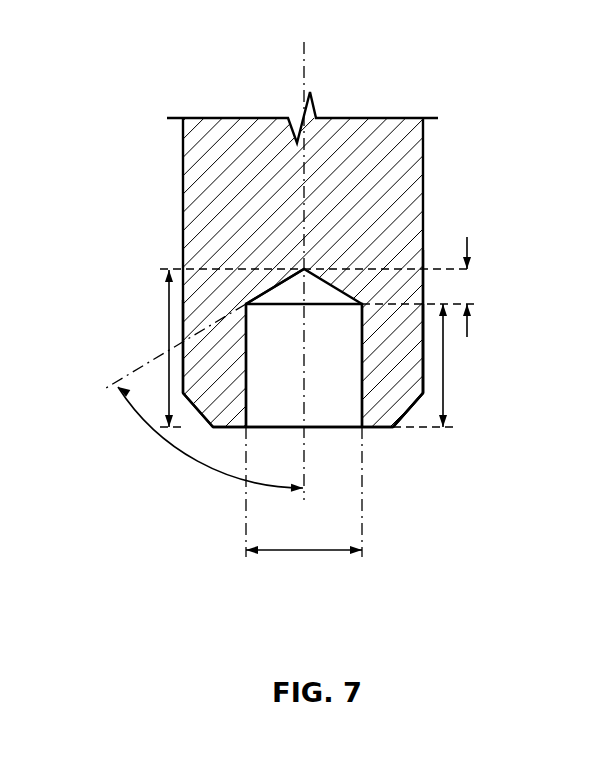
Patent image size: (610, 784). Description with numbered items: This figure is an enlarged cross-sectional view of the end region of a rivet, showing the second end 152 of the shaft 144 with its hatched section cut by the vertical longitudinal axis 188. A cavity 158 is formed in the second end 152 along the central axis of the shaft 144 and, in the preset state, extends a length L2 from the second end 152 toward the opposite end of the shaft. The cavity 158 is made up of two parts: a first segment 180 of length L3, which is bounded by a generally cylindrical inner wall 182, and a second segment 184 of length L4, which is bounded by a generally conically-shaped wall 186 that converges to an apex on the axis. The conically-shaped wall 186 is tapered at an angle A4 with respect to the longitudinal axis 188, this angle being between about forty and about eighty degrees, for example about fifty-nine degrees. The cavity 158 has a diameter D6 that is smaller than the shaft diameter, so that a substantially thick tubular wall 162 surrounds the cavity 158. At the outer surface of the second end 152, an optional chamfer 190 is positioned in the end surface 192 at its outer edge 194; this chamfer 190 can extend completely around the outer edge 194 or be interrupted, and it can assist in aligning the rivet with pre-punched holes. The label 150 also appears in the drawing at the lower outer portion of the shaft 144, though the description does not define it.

The shaft 144 is at (415, 160).
The side wall of body 150 is at (182, 392).
The second end 152 is at (423, 293).
The cavity 158 is at (329, 390).
The tubular wall 162 is at (412, 367).
The first segment 180 is at (406, 408).
The cylindrical inner wall 182 is at (247, 347).
The second segment 184 is at (338, 281).
The conically-shaped wall 186 is at (285, 279).
The longitudinal axis 188 is at (304, 62).
The chamfer 190 is at (198, 408).
The end surface 192 is at (376, 427).
The outer edge 194 is at (376, 385).
The length L2 is at (168, 330).
The length L3 is at (443, 365).
The length L4 is at (467, 244).
The cavity diameter D6 is at (302, 553).
The angle A4 is at (160, 437).